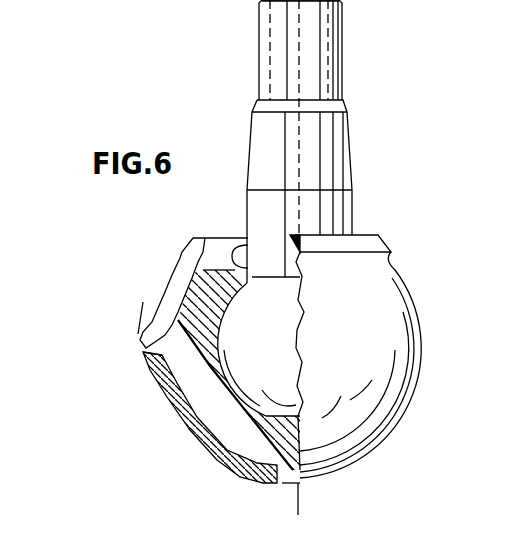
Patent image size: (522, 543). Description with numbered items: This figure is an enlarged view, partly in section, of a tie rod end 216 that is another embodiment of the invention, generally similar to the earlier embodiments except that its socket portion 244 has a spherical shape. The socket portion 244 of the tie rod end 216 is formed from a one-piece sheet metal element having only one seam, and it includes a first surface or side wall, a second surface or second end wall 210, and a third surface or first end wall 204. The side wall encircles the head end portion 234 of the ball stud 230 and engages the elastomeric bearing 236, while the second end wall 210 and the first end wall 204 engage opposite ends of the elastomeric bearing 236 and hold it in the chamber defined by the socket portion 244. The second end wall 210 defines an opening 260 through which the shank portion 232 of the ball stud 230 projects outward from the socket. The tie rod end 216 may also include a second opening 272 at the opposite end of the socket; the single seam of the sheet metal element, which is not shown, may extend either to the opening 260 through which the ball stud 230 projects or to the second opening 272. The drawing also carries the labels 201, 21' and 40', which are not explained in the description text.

The shank portion 232 is at (278, 50).
The ball stud 230 is at (243, 177).
The second end wall 210 is at (364, 243).
The ball joint housing 201 is at (363, 350).
The head end portion 234 is at (292, 344).
The elastomeric bearing 236 is at (200, 322).
The opening 260 is at (217, 250).
The first end wall 204 is at (241, 461).
The second opening 272 is at (284, 485).
The tie rod end 216 is at (112, 383).
The socket portion 244 is at (166, 434).
The ball joint 21' is at (150, 537).
The socket 40' is at (416, 537).